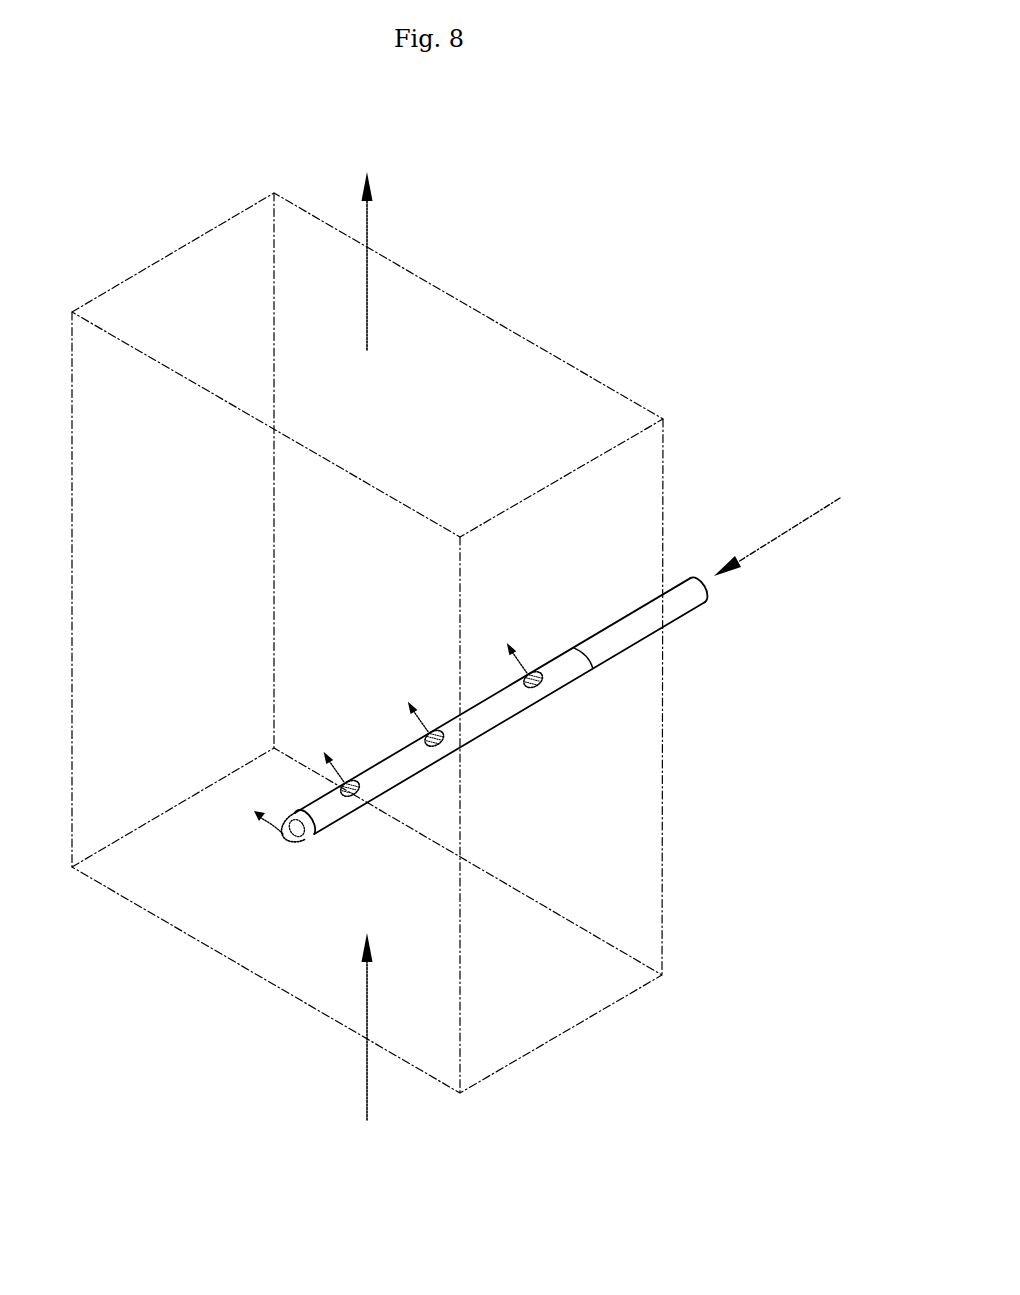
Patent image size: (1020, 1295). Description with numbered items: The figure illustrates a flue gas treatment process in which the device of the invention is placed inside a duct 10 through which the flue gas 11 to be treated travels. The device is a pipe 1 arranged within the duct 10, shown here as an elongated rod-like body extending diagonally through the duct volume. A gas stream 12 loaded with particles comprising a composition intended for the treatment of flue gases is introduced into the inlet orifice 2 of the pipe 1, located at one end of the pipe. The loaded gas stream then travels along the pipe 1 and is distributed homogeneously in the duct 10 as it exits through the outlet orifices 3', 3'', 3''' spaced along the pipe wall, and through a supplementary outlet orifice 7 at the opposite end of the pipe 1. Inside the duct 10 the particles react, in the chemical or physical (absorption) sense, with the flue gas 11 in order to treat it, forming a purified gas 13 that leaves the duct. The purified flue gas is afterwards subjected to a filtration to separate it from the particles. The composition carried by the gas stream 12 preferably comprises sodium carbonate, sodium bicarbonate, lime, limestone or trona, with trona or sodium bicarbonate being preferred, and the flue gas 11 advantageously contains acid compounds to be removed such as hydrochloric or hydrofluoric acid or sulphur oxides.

The pipe 1 is at (675, 620).
The inlet orifice 2 is at (695, 577).
The outlet orifice 3' is at (553, 712).
The outlet orifice 3'' is at (457, 768).
The outlet orifice 3''' is at (376, 823).
The supplementary outlet orifice 7 is at (290, 838).
The duct 10 is at (233, 215).
The flue gas 11 is at (367, 1082).
The gas stream 12 is at (370, 229).
The purified gas 13 is at (787, 533).